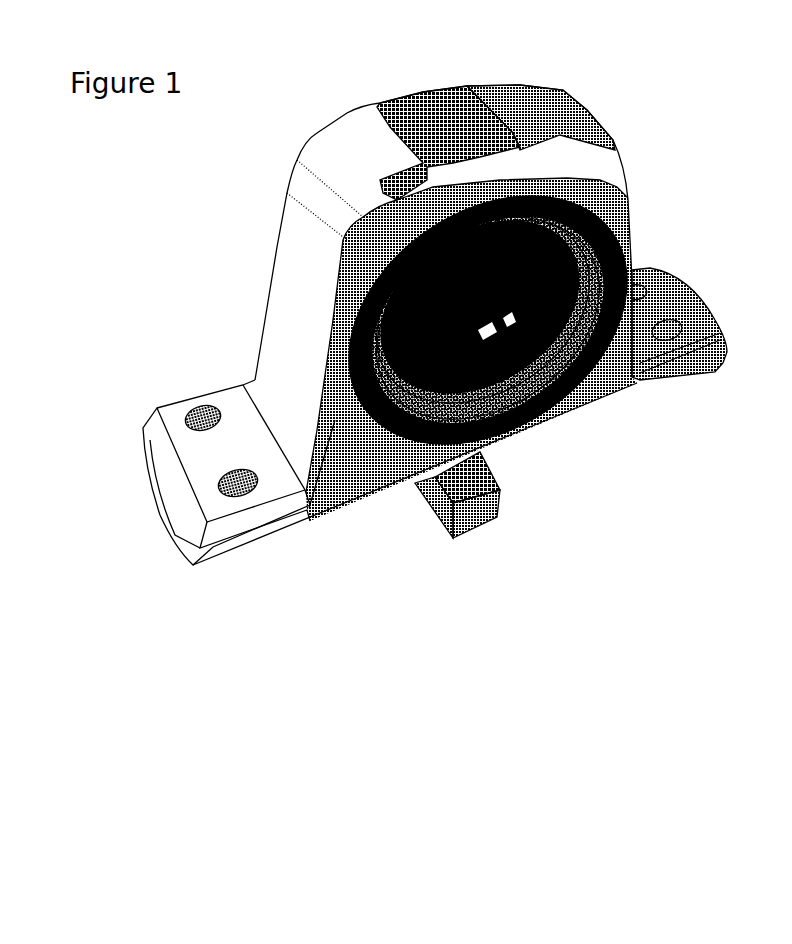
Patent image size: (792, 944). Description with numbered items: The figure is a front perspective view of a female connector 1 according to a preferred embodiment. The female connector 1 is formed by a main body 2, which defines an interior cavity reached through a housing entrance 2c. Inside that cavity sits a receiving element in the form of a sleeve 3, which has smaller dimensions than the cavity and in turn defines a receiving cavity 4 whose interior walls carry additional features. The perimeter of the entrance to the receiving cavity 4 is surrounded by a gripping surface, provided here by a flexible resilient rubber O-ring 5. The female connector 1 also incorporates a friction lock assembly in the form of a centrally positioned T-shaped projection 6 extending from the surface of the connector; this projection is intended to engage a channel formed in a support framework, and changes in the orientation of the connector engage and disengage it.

The female connector 1 is at (185, 638).
The main body 2 is at (518, 78).
The housing entrance 2c is at (383, 262).
The sleeve 3 is at (397, 327).
The receiving cavity 4 is at (515, 350).
The O-ring 5 is at (602, 219).
The T-shaped projection 6 is at (460, 553).